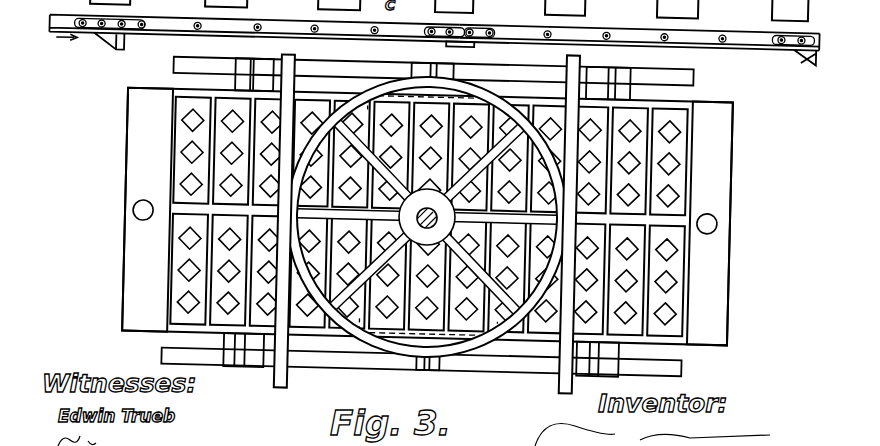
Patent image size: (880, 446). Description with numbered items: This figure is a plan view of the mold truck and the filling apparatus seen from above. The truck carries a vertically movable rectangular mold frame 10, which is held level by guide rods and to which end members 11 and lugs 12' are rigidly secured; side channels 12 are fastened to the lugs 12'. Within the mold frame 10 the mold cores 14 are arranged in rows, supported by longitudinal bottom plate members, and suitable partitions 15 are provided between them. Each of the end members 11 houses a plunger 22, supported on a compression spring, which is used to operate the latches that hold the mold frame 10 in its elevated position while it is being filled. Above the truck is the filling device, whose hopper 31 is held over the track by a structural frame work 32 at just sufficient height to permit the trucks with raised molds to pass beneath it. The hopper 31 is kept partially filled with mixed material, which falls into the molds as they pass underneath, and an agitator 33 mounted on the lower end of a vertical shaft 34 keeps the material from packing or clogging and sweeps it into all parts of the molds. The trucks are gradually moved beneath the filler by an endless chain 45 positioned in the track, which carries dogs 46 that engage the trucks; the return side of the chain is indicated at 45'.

The mold frame 10 is at (677, 103).
The end members 11 is at (138, 118).
The side channels 12 is at (427, 219).
The lugs 12' is at (408, 217).
The mold cores 14 is at (187, 182).
The partitions 15 is at (247, 292).
The plunger 22 is at (140, 210).
The hopper 31 is at (308, 165).
The structural frame work 32 is at (284, 87).
The agitator 33 is at (457, 177).
The vertical shaft 34 is at (438, 205).
The endless chain 45 is at (261, 25).
The return side of the chain 45' is at (639, 25).
The dogs 46 is at (112, 50).